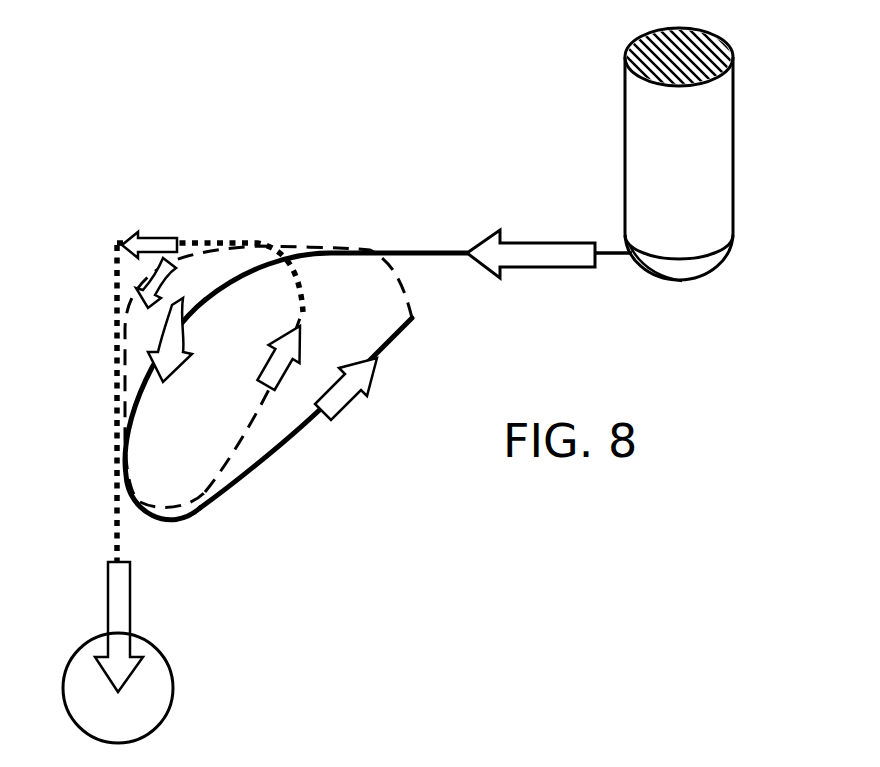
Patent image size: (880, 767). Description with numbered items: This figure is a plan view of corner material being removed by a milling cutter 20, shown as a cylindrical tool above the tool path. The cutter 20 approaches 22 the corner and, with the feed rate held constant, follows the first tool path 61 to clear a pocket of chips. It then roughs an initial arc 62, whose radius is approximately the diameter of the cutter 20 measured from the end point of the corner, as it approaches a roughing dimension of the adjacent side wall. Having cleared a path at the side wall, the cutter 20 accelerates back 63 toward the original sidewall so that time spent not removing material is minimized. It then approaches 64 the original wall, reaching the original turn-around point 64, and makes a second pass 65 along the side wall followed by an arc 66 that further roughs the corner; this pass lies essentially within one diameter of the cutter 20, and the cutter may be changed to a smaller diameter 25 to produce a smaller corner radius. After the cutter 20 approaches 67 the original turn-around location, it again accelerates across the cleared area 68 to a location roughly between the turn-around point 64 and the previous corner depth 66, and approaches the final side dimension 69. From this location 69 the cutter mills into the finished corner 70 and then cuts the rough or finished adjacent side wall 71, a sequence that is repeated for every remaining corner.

The cutter 20 is at (625, 156).
The approach 22 is at (547, 267).
The smaller diameter 25 is at (167, 660).
The first tool path 61 is at (457, 252).
The initial arc 62 is at (127, 405).
The accelerate back 63 is at (257, 463).
The original turn-around point 64 is at (413, 302).
The second pass 65 is at (307, 250).
The arc 66 is at (140, 295).
The approach to original turn-around location 67 is at (188, 503).
The cleared area 68 is at (242, 428).
The final side dimension 69 is at (255, 240).
The finished corner 70 is at (117, 245).
The adjacent side wall 71 is at (115, 548).